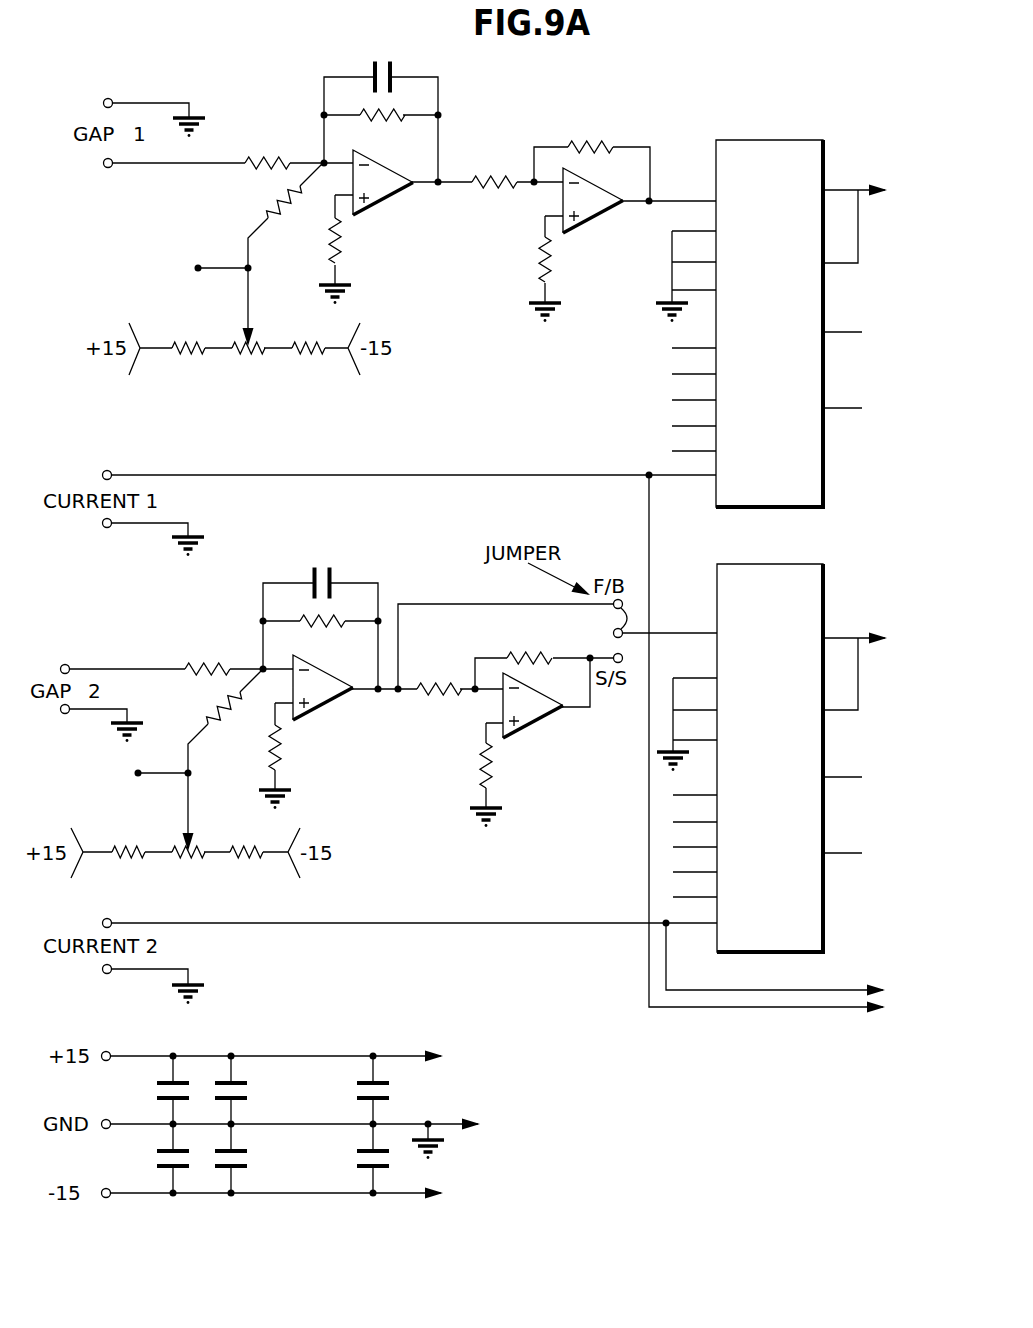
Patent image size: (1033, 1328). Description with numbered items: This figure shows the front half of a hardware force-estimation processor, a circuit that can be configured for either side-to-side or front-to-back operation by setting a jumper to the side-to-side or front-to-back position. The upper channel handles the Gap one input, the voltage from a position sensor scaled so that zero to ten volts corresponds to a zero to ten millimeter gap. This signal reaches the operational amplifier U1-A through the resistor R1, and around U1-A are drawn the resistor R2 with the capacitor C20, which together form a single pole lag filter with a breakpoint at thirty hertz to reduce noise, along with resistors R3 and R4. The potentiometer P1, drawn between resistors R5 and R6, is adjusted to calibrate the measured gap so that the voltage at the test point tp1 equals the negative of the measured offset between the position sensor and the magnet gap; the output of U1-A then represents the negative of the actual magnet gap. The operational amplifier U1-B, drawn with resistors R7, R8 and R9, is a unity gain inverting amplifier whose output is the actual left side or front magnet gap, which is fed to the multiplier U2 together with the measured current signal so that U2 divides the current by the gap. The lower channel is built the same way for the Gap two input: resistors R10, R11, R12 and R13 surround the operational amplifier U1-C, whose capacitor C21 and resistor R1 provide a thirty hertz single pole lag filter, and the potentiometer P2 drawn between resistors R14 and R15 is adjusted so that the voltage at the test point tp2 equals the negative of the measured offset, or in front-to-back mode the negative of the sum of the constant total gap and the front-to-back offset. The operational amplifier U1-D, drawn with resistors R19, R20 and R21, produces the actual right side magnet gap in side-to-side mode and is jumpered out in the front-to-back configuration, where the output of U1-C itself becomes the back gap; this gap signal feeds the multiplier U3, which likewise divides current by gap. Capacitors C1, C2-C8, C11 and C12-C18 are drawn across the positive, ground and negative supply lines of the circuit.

The resistor R1 is at (267, 147).
The resistor R2 is at (382, 128).
The bias resistor R3 is at (351, 240).
The offset resistor R4 is at (270, 202).
The resistor R5 is at (188, 362).
The resistor R6 is at (308, 362).
The potentiometer P1 is at (248, 362).
The capacitor C20 is at (376, 64).
The operational amplifier U1-A is at (394, 186).
The input resistor R7 is at (494, 168).
The feedback resistor R8 is at (590, 135).
The bias resistor R9 is at (525, 259).
The operational amplifier U1-B is at (604, 205).
The AD534 multiplier U2 is at (772, 310).
The test point node tp1 is at (202, 263).
The input resistor R10 is at (207, 653).
The feedback resistor R11 is at (322, 635).
The bias resistor R12 is at (298, 751).
The offset resistor R13 is at (200, 711).
The resistor R14 is at (126, 865).
The resistor R15 is at (246, 865).
The potentiometer P2 is at (188, 865).
The capacitor C21 is at (319, 569).
The operational amplifier U1-C is at (334, 691).
The input resistor R19 is at (438, 674).
The feedback resistor R20 is at (529, 644).
The bias resistor R21 is at (463, 765).
The operational amplifier U1-D is at (545, 710).
The AD534 multiplier U3 is at (772, 745).
The test point node tp2 is at (141, 768).
The bypass capacitor C1 is at (162, 1090).
The bypass capacitors C2-C8 is at (302, 1090).
The bypass capacitor C11 is at (158, 1158).
The bypass capacitors C12-C18 is at (302, 1158).